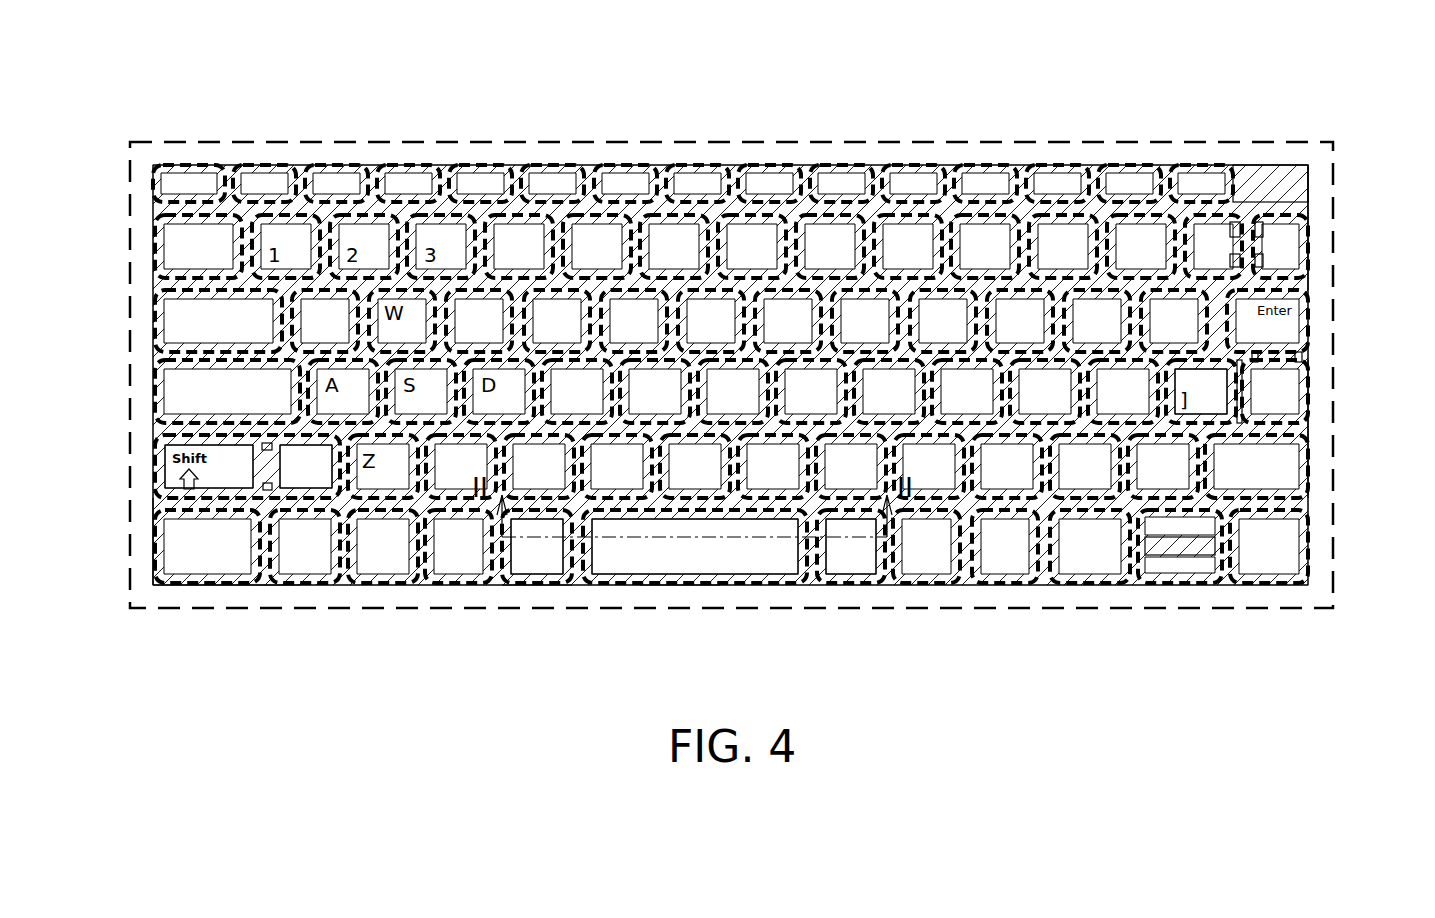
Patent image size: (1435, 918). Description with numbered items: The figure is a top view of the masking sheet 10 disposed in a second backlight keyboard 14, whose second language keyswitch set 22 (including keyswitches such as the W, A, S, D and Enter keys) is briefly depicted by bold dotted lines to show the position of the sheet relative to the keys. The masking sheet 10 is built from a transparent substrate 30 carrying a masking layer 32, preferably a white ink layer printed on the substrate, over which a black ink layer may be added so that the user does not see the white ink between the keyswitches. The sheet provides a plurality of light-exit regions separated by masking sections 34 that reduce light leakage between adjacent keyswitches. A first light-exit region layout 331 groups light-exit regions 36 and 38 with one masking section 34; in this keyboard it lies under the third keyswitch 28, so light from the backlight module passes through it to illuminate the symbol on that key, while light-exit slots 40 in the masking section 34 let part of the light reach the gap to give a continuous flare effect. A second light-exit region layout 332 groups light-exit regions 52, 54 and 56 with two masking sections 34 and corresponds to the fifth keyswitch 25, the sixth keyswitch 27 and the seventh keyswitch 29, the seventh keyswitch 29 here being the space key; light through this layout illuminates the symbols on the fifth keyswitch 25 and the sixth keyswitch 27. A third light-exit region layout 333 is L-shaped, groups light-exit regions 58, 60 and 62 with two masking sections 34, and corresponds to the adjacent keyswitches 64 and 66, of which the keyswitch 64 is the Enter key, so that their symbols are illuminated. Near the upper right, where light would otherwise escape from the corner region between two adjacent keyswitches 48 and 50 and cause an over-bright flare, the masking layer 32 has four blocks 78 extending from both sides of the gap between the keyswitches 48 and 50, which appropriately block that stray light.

The masking sheet 10 is at (1311, 159).
The second backlight keyboard 14 is at (126, 127).
The second language keyswitch set 22 is at (162, 593).
The fifth keyswitch 25 is at (538, 585).
The sixth keyswitch 27 is at (853, 584).
The third keyswitch 28 is at (155, 502).
The seventh keyswitch 29 is at (683, 585).
The transparent substrate 30 is at (1310, 176).
The masking layer 32 is at (1270, 186).
The masking section 34 is at (815, 543).
The light-exit region 36 is at (215, 474).
The light-exit region 38 is at (308, 474).
The light-exit slot 40 is at (265, 491).
The keyswitch 48 is at (1213, 213).
The keyswitch 50 is at (1308, 217).
The light-exit region 52 is at (552, 562).
The light-exit region 54 is at (746, 553).
The light-exit region 56 is at (860, 562).
The light-exit region 58 is at (1273, 322).
The light-exit region 60 is at (1287, 388).
The light-exit region 62 is at (1205, 405).
The keyswitch 64 is at (1287, 428).
The keyswitch 66 is at (1172, 427).
The block 78 is at (1244, 268).
The first light-exit region layout 331 is at (163, 477).
The second light-exit region layout 332 is at (507, 584).
The third light-exit region layout 333 is at (1310, 427).